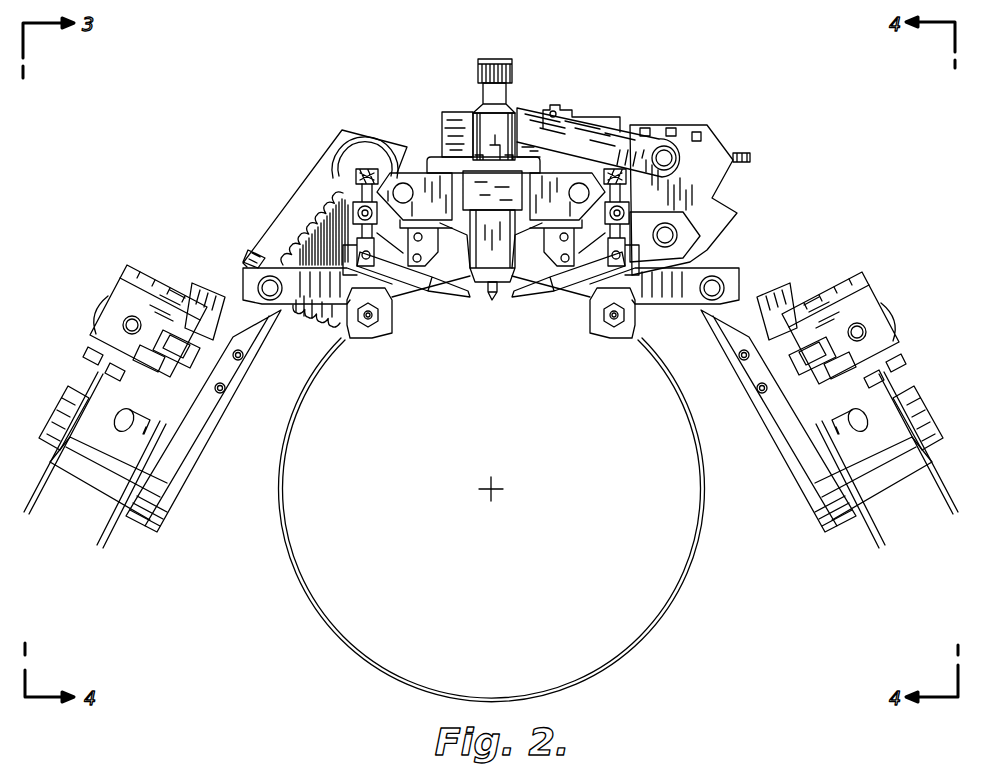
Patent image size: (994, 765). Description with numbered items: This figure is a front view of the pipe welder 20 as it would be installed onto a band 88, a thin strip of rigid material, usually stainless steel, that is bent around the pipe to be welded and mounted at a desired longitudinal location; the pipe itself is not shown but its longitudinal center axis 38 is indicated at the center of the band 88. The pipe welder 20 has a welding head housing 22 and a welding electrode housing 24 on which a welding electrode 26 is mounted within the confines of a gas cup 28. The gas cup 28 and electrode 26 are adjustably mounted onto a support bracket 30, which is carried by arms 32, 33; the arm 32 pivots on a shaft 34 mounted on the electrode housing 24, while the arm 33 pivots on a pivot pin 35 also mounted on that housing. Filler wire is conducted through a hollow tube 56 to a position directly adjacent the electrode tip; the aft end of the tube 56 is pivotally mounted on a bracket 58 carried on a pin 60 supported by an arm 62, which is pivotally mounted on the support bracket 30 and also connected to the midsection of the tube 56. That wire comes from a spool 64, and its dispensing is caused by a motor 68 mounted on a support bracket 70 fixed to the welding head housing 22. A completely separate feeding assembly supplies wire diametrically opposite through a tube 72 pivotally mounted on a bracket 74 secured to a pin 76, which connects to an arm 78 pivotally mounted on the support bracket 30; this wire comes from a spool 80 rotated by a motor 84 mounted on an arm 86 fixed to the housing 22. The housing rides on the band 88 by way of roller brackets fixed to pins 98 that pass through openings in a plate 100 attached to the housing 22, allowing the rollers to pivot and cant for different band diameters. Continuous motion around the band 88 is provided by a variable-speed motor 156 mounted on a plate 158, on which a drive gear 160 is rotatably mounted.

The pipe welder 20 is at (726, 99).
The welding head housing 22 is at (437, 170).
The welding electrode housing 24 is at (688, 203).
The welding electrode 26 is at (495, 303).
The gas cup 28 is at (488, 270).
The support bracket 30 is at (466, 112).
The arm 32 is at (527, 105).
The arm 33 is at (687, 243).
The shaft 34 is at (664, 148).
The pivot pin 35 is at (677, 233).
The longitudinal center axis 38 is at (499, 492).
The hollow tube 56 is at (435, 293).
The bracket 58 is at (333, 311).
The pin 60 is at (356, 172).
The arm 62 is at (353, 212).
The spool 64 is at (110, 480).
The motor 68 is at (97, 317).
The support bracket 70 is at (147, 283).
The tube 72 is at (578, 242).
The bracket 74 is at (630, 267).
The pin 76 is at (627, 190).
The arm 78 is at (613, 323).
The spool 80 is at (885, 548).
The motor 84 is at (893, 300).
The arm 86 is at (843, 287).
The band 88 is at (656, 612).
The pin 98 is at (383, 327).
The plate 100 is at (362, 333).
The motor 156 is at (363, 150).
The plate 158 is at (273, 237).
The drive gear 160 is at (283, 220).